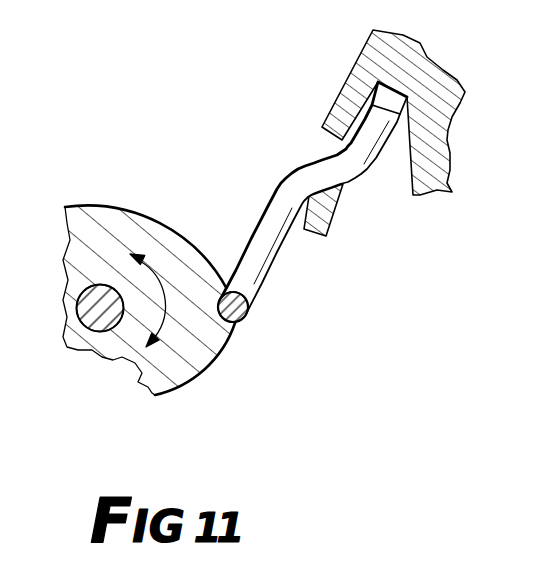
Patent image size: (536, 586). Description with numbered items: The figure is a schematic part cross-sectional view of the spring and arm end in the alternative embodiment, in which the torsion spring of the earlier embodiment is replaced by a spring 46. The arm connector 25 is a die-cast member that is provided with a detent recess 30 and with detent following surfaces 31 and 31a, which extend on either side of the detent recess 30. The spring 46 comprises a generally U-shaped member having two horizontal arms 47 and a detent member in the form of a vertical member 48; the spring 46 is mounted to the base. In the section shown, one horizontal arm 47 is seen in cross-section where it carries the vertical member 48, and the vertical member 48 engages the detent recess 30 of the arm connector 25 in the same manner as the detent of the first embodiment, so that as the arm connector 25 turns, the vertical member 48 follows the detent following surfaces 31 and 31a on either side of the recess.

The arm connector 25 is at (80, 124).
The detent recess 30 is at (218, 298).
The detent following surface 31 is at (200, 368).
The detent following surface 31a is at (164, 223).
The spring 46 is at (303, 256).
The horizontal arm 47 is at (268, 208).
The vertical member 48 is at (238, 325).